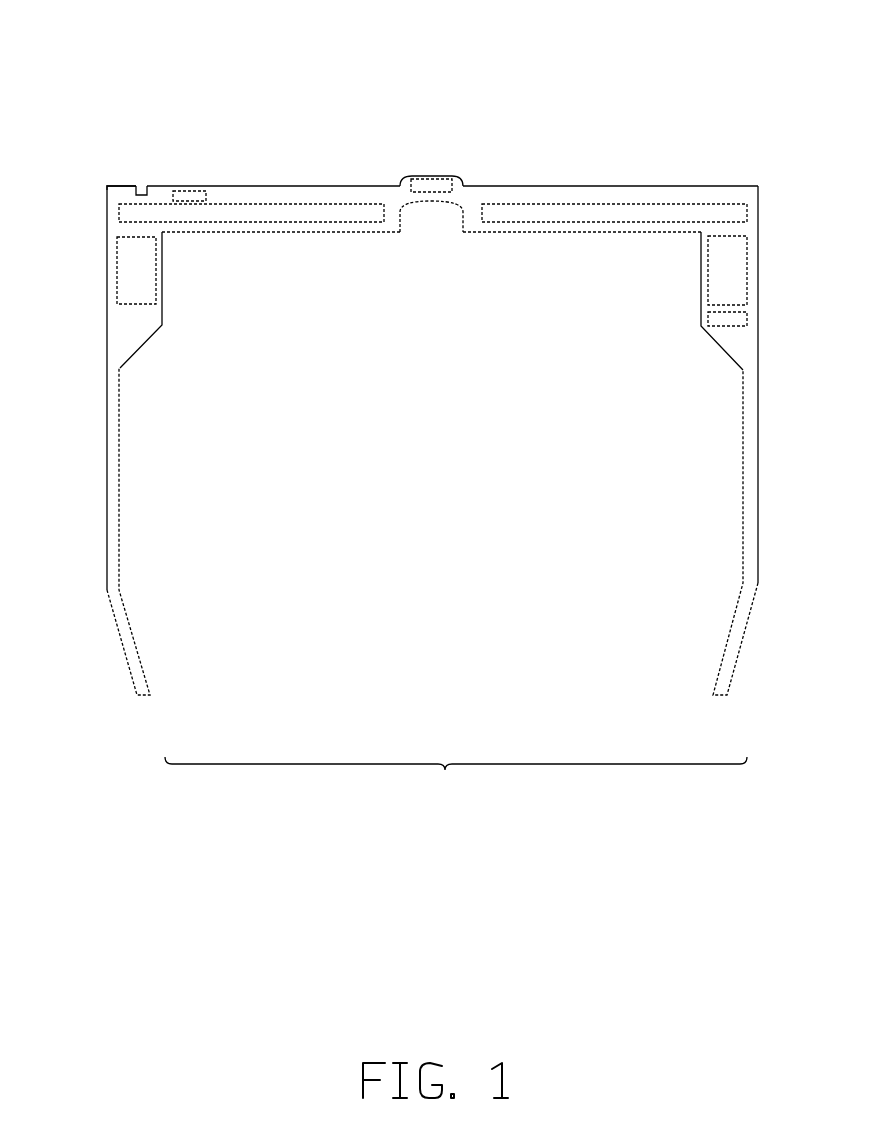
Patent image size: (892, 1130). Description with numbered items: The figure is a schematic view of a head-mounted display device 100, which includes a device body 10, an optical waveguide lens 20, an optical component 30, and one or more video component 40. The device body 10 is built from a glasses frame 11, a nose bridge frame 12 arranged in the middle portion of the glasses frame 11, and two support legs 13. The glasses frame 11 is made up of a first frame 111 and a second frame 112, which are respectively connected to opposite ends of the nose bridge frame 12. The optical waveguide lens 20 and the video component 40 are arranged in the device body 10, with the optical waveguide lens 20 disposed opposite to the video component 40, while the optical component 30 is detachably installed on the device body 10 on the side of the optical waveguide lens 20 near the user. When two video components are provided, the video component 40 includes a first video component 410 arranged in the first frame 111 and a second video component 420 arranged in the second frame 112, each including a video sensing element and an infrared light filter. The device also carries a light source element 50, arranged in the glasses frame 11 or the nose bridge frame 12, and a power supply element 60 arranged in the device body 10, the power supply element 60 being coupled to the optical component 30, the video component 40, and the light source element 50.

The head-mounted display device 100 is at (446, 31).
The device body 10 is at (456, 780).
The glasses frame 11 is at (231, 226).
The nose bridge frame 12 is at (431, 197).
The support legs 13 is at (720, 695).
The optical waveguide lens 20 is at (122, 215).
The optical component 30 is at (136, 268).
The video component 40 is at (138, 188).
The first video component 410 is at (140, 178).
The second video component 420 is at (430, 171).
The light source element 50 is at (190, 191).
The power supply element 60 is at (740, 317).
The first frame 111 is at (299, 177).
The second frame 112 is at (679, 177).